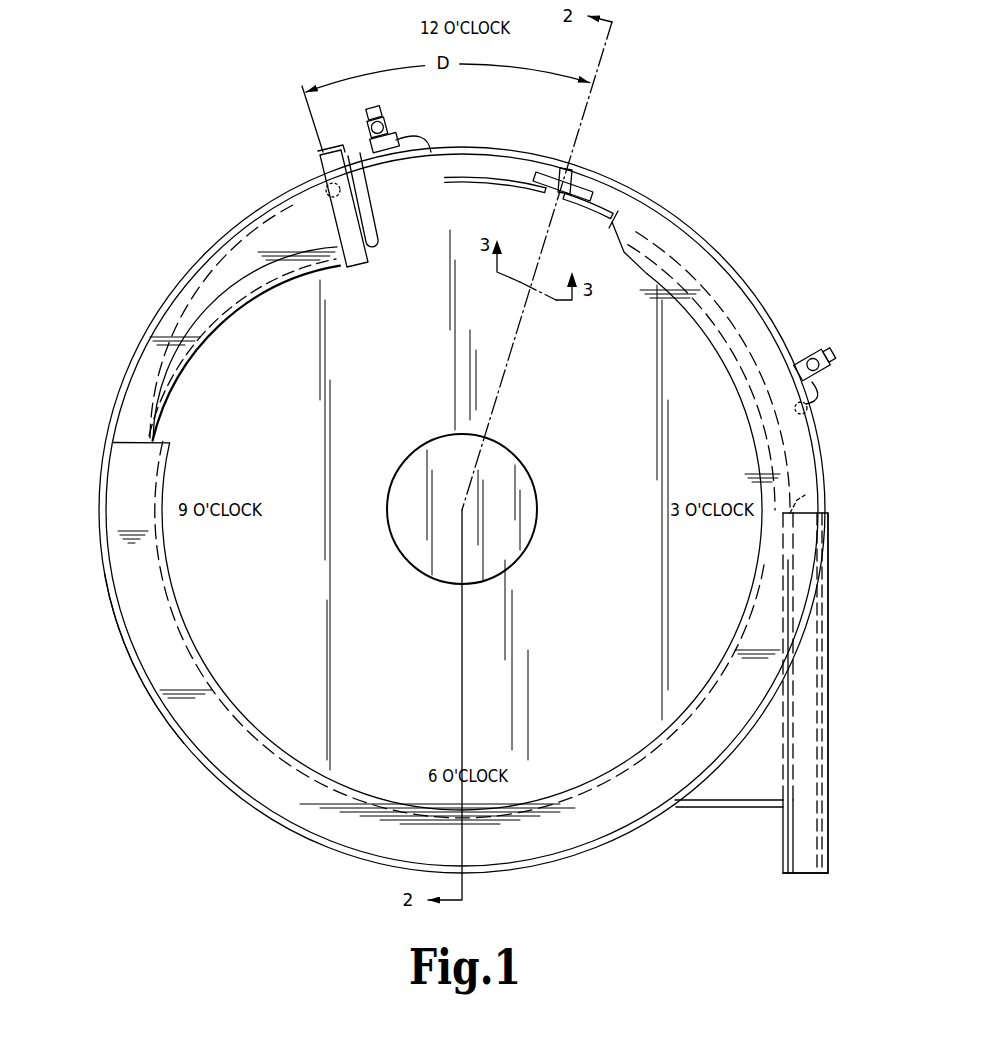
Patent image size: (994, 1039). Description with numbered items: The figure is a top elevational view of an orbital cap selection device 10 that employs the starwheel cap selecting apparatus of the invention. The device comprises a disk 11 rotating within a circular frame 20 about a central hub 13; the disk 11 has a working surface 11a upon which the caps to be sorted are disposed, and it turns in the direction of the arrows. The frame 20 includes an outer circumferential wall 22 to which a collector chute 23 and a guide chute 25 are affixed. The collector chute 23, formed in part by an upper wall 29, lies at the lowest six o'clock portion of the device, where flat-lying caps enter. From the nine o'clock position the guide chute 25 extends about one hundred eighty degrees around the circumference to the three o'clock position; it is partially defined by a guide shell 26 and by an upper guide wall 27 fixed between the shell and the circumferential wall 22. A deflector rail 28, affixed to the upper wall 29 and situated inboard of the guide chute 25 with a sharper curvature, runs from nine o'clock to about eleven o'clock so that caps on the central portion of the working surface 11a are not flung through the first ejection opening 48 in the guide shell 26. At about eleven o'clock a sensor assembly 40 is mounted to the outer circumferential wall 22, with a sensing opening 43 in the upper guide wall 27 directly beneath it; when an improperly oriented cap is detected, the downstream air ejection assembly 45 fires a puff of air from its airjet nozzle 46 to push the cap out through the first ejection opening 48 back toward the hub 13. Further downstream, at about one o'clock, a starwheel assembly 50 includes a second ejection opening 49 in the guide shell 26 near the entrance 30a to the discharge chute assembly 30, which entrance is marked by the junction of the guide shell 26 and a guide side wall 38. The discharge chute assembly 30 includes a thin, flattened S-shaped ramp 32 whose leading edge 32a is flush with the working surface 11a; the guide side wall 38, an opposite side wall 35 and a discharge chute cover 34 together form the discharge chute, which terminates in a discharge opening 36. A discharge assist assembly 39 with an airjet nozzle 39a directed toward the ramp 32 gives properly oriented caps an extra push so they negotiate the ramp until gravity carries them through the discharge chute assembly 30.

The orbital cap selection device 10 is at (213, 226).
The disk 11 is at (304, 752).
The working surface 11a is at (315, 525).
The hub 13 is at (535, 504).
The frame 20 is at (104, 600).
The outer circumferential wall 22 is at (157, 697).
The collector chute 23 is at (244, 768).
The guide chute 25 is at (154, 358).
The guide shell 26 is at (257, 244).
The upper guide wall 27 is at (495, 172).
The deflector rail 28 is at (255, 308).
The upper wall 29 is at (437, 823).
The discharge chute assembly 30 is at (829, 512).
The entrance 30a is at (640, 208).
The ramp 32 is at (800, 876).
The leading edge 32a is at (806, 501).
The discharge chute cover 34 is at (830, 583).
The side wall 35 is at (815, 647).
The discharge opening 36 is at (822, 876).
The guide side wall 38 is at (692, 258).
The discharge assist assembly 39 is at (817, 345).
The airjet nozzle 39a is at (806, 409).
The sensor assembly 40 is at (320, 158).
The sensing opening 43 is at (325, 190).
The air ejection assembly 45 is at (393, 128).
The airjet nozzle 46 is at (420, 150).
The first ejection opening 48 is at (447, 183).
The second ejection opening 49 is at (572, 203).
The starwheel assembly 50 is at (590, 170).